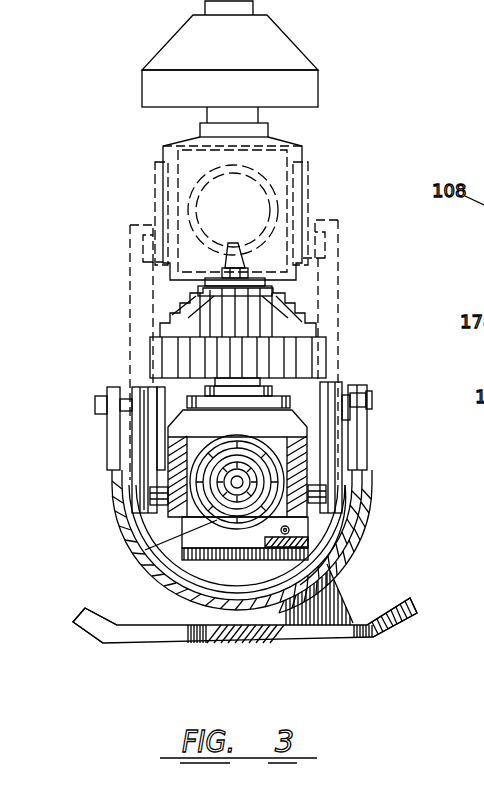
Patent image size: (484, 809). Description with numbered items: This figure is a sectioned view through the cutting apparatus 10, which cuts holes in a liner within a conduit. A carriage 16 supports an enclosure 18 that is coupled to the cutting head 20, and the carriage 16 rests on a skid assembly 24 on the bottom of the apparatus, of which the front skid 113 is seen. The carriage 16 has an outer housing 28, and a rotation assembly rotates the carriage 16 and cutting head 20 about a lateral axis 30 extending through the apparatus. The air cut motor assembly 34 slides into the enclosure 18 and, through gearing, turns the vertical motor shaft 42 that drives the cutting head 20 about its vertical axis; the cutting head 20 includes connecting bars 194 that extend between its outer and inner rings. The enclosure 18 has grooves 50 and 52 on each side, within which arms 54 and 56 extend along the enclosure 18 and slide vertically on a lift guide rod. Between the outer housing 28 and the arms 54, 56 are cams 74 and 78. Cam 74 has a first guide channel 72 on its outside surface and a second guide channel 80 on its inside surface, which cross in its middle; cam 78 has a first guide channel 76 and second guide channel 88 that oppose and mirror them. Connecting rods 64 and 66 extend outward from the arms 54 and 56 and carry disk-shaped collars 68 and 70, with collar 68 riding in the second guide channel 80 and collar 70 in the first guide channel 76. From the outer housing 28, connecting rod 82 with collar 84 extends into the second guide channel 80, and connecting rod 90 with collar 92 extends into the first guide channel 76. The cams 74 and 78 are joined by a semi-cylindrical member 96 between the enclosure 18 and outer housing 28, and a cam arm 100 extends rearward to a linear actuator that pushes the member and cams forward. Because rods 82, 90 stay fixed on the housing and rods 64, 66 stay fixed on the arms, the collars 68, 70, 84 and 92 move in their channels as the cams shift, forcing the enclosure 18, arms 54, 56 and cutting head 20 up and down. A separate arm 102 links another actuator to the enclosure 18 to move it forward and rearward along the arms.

The cutting apparatus 10 is at (352, 292).
The cutting head 20 is at (290, 35).
The connecting bars 194 is at (187, 327).
The vertical motor shaft 42 is at (252, 383).
The groove 50 is at (178, 436).
The groove 52 is at (262, 421).
The air cut motor assembly 34 is at (280, 460).
The enclosure 18 is at (240, 522).
The arm 56 is at (340, 548).
The disk-shaped collar 84 is at (133, 392).
The connecting rod 82 is at (120, 418).
The cam 74 is at (142, 377).
The first guide channel 72 is at (137, 437).
The second guide channel 80 is at (148, 393).
The disk-shaped collar 68 is at (152, 495).
The cam 78 is at (328, 378).
The disk-shaped collar 92 is at (337, 410).
The connecting rod 90 is at (355, 388).
The second guide channel 88 is at (325, 457).
The first guide channel 76 is at (337, 473).
The disk-shaped collar 70 is at (323, 495).
The connecting rod 64 is at (122, 533).
The connecting rod 66 is at (363, 527).
The axis 30 is at (160, 578).
The arm 54 is at (150, 553).
The semi-cylindrical member 96 is at (345, 567).
The carriage 16 is at (345, 578).
The outer housing 28 is at (330, 583).
The arm 102 is at (229, 593).
The skid assembly 24 is at (312, 640).
The cam arm 100 is at (200, 640).
The front skid 113 is at (402, 616).